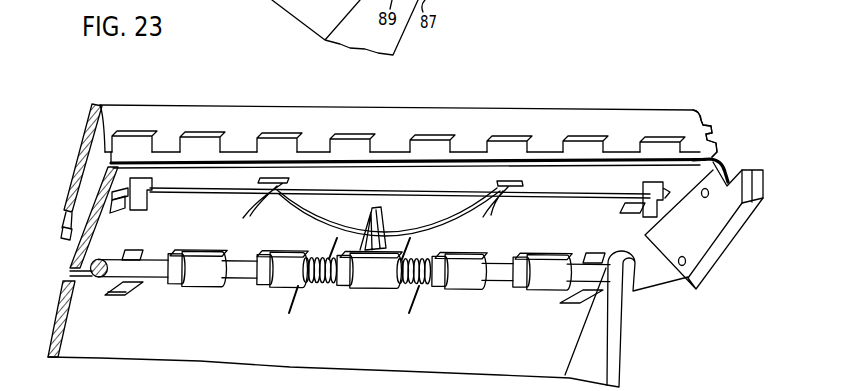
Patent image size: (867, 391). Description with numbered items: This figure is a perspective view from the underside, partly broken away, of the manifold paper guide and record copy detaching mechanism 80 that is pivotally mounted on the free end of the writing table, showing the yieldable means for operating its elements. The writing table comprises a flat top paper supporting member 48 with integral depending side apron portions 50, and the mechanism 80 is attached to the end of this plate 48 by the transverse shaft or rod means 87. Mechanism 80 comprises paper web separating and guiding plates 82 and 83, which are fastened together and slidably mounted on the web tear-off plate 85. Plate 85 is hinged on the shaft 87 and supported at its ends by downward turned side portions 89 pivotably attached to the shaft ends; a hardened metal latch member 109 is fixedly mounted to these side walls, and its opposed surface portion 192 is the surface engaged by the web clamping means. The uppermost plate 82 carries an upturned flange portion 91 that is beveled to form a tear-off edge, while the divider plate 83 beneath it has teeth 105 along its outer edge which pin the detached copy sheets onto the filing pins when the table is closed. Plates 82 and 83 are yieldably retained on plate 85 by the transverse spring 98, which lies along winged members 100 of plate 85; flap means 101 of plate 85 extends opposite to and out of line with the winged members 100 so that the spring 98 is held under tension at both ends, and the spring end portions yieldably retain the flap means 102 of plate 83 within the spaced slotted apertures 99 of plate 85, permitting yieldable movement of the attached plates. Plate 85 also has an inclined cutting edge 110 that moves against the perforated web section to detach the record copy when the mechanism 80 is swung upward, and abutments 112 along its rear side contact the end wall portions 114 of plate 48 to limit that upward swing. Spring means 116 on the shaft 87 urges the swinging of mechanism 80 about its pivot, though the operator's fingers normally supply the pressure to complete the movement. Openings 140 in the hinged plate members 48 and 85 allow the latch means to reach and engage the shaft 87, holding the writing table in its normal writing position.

The flat top paper supporting member 48 is at (88, 356).
The depending side apron portion 50 is at (609, 364).
The manifold paper guide and record copy detaching mechanism 80 is at (340, 104).
The manifold paper web separating and guiding plate 82 is at (660, 112).
The web guide plate 83 is at (598, 140).
The web tear-off plate 85 is at (615, 181).
The transverse shaft member 87 is at (497, 279).
The downward turned side portion 89 is at (730, 170).
The upturned flange portion 91 is at (97, 108).
The transverse spring 98 is at (330, 220).
The aperture 99 is at (119, 208).
The winged member 100 is at (244, 213).
The flap means 101 is at (388, 228).
The flap means 102 is at (148, 187).
The teeth 105 is at (268, 142).
The latch member 109 is at (719, 224).
The inclined cutting edge 110 is at (233, 162).
The abutment 112 is at (70, 271).
The end wall portion 114 is at (70, 277).
The spring means 116 is at (401, 290).
The opening 140 is at (117, 298).
The opposed surface portion 192 is at (763, 190).